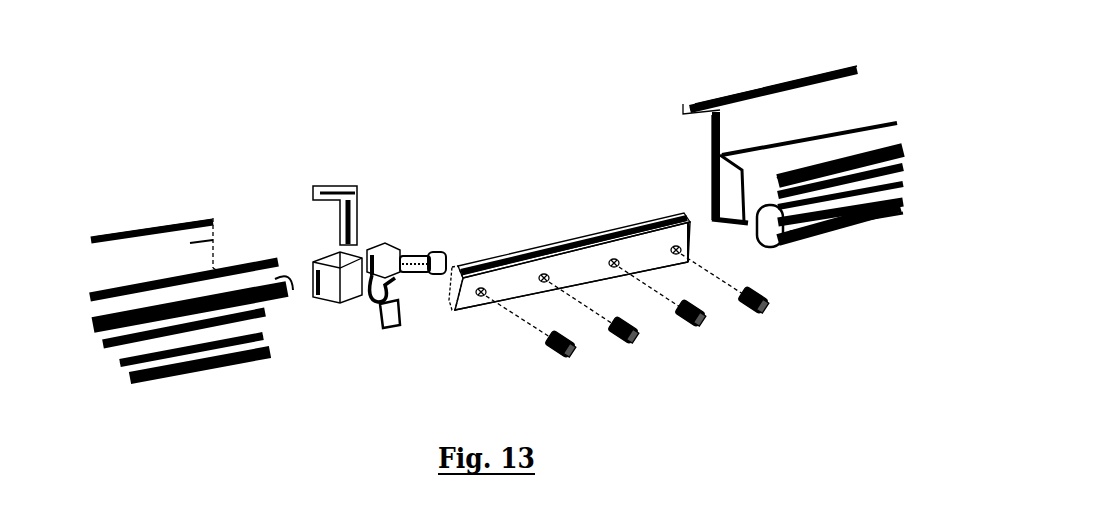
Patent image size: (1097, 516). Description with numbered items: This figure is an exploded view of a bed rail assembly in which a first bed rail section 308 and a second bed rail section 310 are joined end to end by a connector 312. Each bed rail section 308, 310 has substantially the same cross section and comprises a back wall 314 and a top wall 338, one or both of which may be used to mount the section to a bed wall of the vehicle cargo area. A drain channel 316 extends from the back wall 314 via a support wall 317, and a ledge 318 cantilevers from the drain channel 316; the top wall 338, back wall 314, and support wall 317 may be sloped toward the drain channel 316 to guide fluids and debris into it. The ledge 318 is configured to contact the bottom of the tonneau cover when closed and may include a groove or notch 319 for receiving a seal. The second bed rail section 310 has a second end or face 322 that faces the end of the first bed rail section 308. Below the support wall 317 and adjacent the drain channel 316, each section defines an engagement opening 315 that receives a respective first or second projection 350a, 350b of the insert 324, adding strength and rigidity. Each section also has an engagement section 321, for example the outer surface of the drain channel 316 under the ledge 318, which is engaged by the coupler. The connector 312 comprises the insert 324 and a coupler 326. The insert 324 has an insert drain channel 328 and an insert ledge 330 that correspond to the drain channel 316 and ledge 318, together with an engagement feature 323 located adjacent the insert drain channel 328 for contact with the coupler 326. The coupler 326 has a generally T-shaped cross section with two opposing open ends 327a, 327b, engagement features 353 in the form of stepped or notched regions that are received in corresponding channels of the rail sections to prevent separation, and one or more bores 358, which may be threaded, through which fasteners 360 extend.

The first bed rail section 308 is at (121, 257).
The second bed rail section 310 is at (792, 104).
The connector 312 is at (537, 168).
The back wall 314 is at (187, 242).
The engagement opening 315 is at (227, 267).
The drain channel 316 is at (168, 387).
The support wall 317 is at (163, 290).
The ledge 318 is at (275, 278).
The groove or notch 319 is at (797, 178).
The engagement section 321 is at (222, 347).
The second end or face 322 is at (770, 235).
The engagement feature 323 is at (392, 326).
The insert 324 is at (353, 179).
The coupler 326 is at (548, 236).
The first open end 327a is at (452, 324).
The second open end 327b is at (705, 239).
The insert drain channel 328 is at (380, 288).
The insert ledge 330 is at (416, 262).
The top wall 338 is at (178, 225).
The first projection 350a is at (333, 260).
The second projection 350b is at (378, 243).
The engagement features 353 is at (523, 257).
The bores 358 is at (484, 293).
The fastener 360 is at (580, 352).